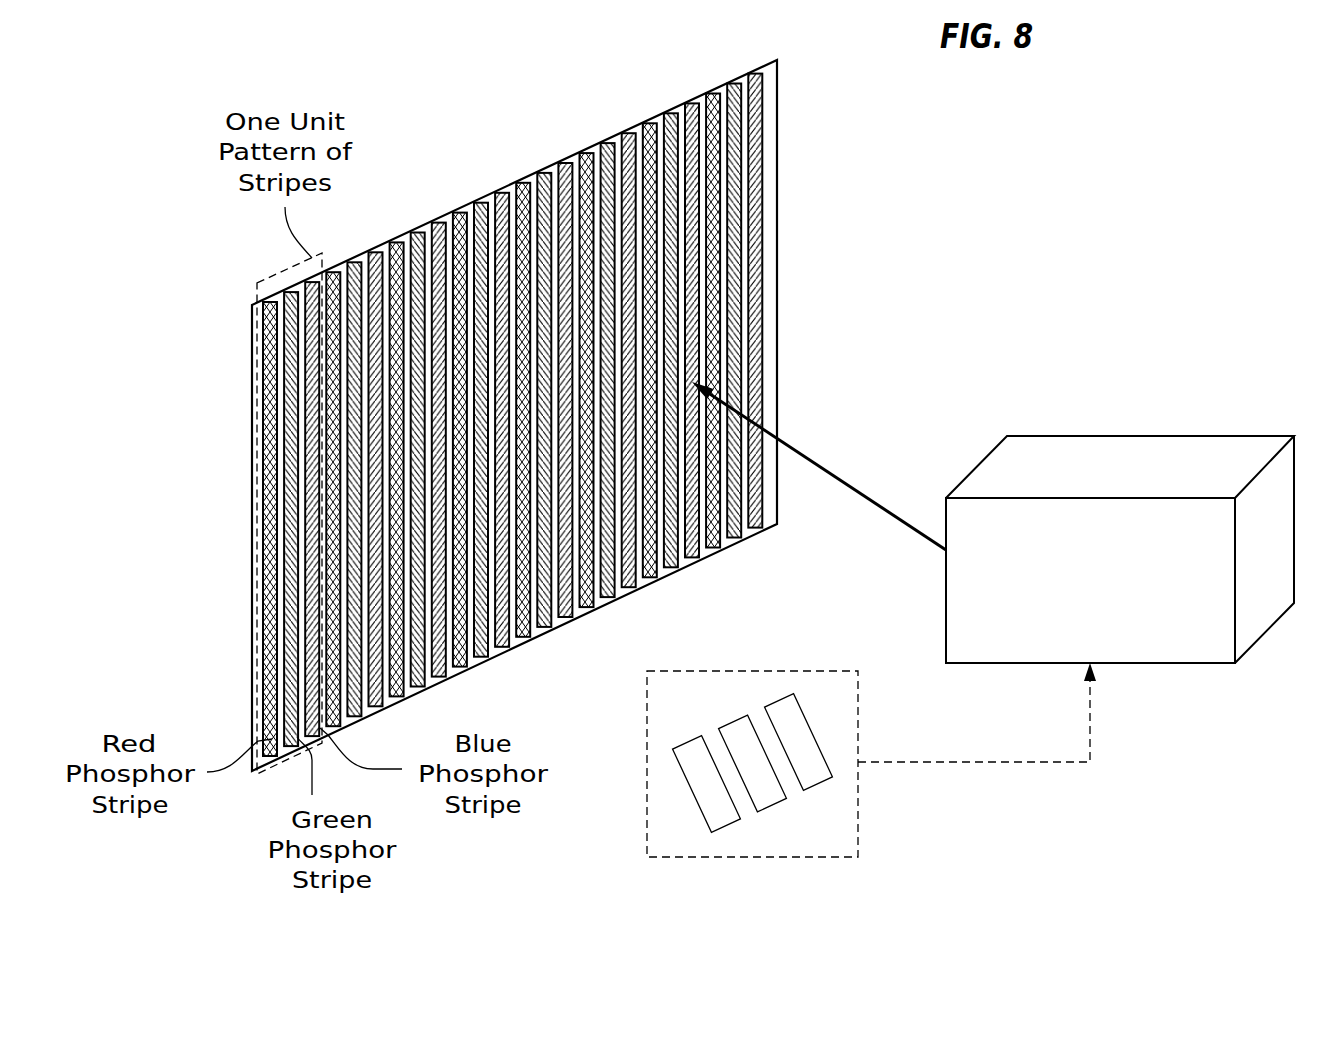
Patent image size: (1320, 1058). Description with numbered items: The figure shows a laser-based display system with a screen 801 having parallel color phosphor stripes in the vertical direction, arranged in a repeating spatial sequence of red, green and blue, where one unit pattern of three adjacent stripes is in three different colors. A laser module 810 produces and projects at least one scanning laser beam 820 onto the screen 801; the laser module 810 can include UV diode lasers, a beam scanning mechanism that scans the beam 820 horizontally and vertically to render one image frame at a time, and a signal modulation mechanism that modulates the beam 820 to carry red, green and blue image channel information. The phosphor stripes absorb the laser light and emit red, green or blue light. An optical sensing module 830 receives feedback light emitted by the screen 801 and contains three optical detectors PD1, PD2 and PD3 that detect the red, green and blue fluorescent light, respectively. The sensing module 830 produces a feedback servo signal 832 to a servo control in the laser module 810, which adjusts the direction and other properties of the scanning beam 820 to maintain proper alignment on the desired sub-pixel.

The screen 801 is at (777, 77).
The laser module 810 is at (1013, 664).
The scanning laser beam 820 is at (836, 475).
The optical sensing module 830 is at (787, 791).
The feedback servo signal 832 is at (1092, 717).
The optical detector PD1 is at (727, 826).
The optical detector PD2 is at (776, 808).
The optical detector PD3 is at (823, 783).